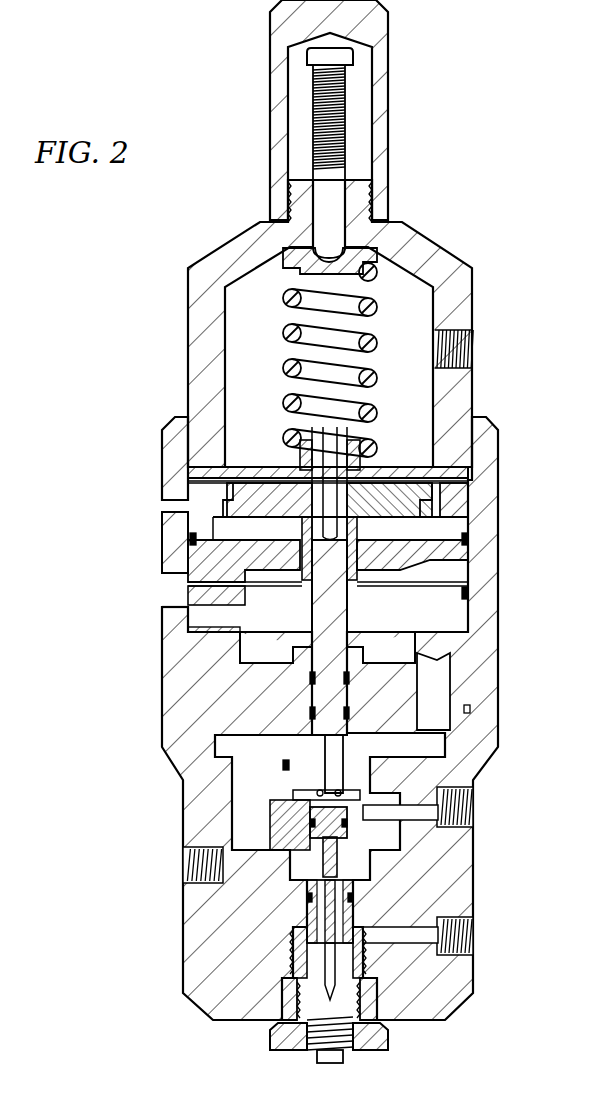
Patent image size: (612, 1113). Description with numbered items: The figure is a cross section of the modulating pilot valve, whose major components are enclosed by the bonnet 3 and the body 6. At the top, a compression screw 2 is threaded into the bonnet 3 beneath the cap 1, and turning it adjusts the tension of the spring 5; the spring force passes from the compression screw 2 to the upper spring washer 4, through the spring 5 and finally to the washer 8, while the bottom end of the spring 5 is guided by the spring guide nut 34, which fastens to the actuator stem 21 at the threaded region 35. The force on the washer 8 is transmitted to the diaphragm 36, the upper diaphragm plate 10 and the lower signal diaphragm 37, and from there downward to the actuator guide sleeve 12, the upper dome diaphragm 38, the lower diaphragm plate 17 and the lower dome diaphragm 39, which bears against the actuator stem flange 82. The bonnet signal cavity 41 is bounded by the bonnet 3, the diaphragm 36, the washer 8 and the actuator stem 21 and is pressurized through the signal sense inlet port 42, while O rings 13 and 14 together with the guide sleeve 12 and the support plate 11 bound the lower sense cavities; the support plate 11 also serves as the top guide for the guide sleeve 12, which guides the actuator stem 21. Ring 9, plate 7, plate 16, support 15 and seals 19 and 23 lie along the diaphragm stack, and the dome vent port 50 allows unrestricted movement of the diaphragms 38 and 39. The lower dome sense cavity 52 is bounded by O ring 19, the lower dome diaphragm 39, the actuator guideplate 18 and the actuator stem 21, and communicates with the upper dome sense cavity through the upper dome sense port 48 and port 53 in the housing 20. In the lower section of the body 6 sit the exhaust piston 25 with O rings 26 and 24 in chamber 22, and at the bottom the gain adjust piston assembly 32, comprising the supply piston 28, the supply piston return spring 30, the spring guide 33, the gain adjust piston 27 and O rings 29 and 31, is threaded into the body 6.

The cap 1 is at (380, 40).
The compression screw 2 is at (347, 117).
The bonnet 3 is at (418, 240).
The threaded neck 35 is at (272, 220).
The upper spring washer 4 is at (377, 257).
The spring 5 is at (283, 300).
The bonnet signal cavity 41 is at (388, 368).
The signal sense inlet port 42 is at (470, 347).
The body 6 is at (172, 417).
The diaphragm plate 7 is at (175, 470).
The washer 8 is at (273, 467).
The lower signal diaphragm 37 is at (223, 510).
The spring guide nut 34 is at (360, 445).
The diaphragm 36 is at (427, 480).
The ring 9 is at (470, 497).
The upper signal/dome diaphragm vent support plate 11 is at (462, 525).
The O ring 13 is at (180, 538).
The upper diaphragm plate 10 is at (258, 515).
The O ring 14 is at (297, 567).
The upper dome diaphragm 38 is at (248, 572).
The actuator guide sleeve 12 is at (352, 560).
The plate 16 is at (200, 597).
The dome vent port 50 is at (162, 613).
The lower diaphragm plate 17 is at (267, 622).
The support 15 is at (473, 587).
The upper dome sense port 48 is at (452, 613).
The lower dome diaphragm 39 is at (468, 633).
The lower dome sense cavity 52 is at (252, 663).
The actuator stem flange 82 is at (363, 637).
The actuator guideplate 18 is at (222, 705).
The O ring 19 is at (310, 678).
The actuator stem 21 is at (349, 678).
The seal 23 is at (349, 713).
The port 53 is at (414, 712).
The housing 20 is at (467, 712).
The chamber 22 is at (292, 765).
The O ring 24 is at (310, 787).
The O ring 26 is at (305, 823).
The exhaust piston 25 is at (347, 825).
The supply piston 28 is at (340, 917).
The gain adjust piston 27 is at (353, 880).
The O ring 29 is at (307, 897).
The supply piston return spring 30 is at (308, 965).
The O ring 31 is at (380, 1007).
The gain adjust piston assembly 32 is at (267, 1033).
The spring guide 33 is at (343, 1047).